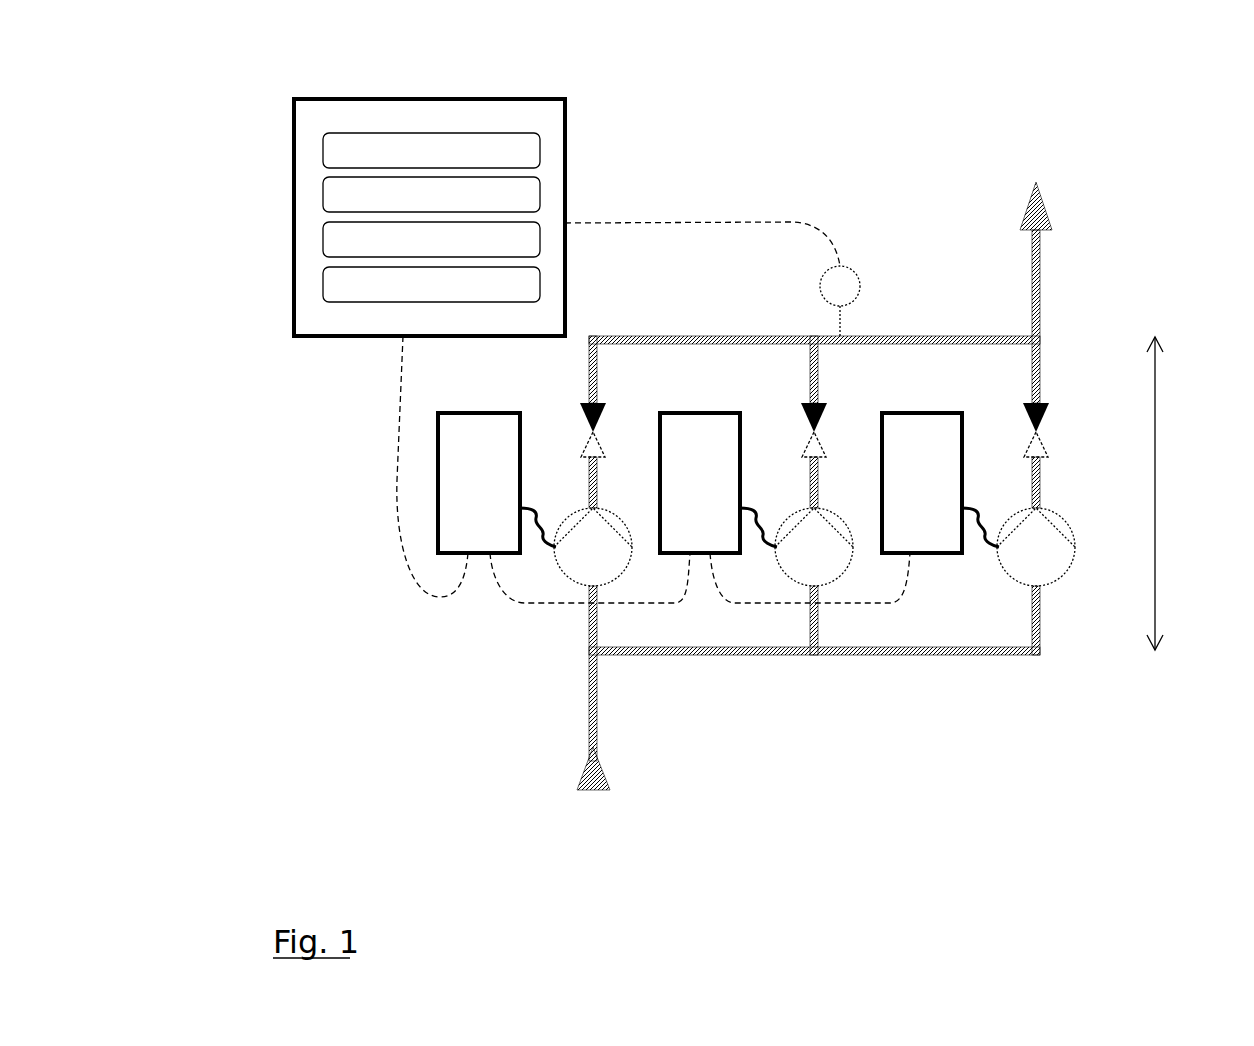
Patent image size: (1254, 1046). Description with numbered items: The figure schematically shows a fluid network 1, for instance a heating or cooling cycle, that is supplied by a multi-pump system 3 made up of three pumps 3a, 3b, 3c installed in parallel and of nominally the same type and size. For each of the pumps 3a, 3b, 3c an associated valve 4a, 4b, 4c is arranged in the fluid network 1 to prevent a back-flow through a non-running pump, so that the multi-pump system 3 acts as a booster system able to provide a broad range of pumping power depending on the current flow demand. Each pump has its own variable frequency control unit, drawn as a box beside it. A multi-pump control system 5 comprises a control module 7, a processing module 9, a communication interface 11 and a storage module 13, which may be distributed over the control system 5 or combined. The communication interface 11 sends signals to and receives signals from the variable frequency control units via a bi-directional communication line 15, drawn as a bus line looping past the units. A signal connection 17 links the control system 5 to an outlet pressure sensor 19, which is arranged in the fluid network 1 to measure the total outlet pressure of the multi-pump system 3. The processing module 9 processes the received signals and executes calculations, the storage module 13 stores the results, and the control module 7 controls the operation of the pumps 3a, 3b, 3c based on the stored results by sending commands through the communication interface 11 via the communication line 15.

The fluid network 1 is at (173, 77).
The multi-pump system 3 is at (836, 186).
The pump 3a is at (581, 567).
The pump 3b is at (802, 567).
The pump 3c is at (1024, 567).
The valve 4a is at (600, 428).
The valve 4b is at (821, 428).
The valve 4c is at (1043, 428).
The multi-pump control system 5 is at (477, 99).
The control module 7 is at (424, 161).
The processing module 9 is at (424, 205).
The communication interface 11 is at (418, 250).
The storage module 13 is at (418, 295).
The communication line 15 is at (395, 508).
The signal connection 17 is at (715, 220).
The outlet pressure sensor 19 is at (860, 289).